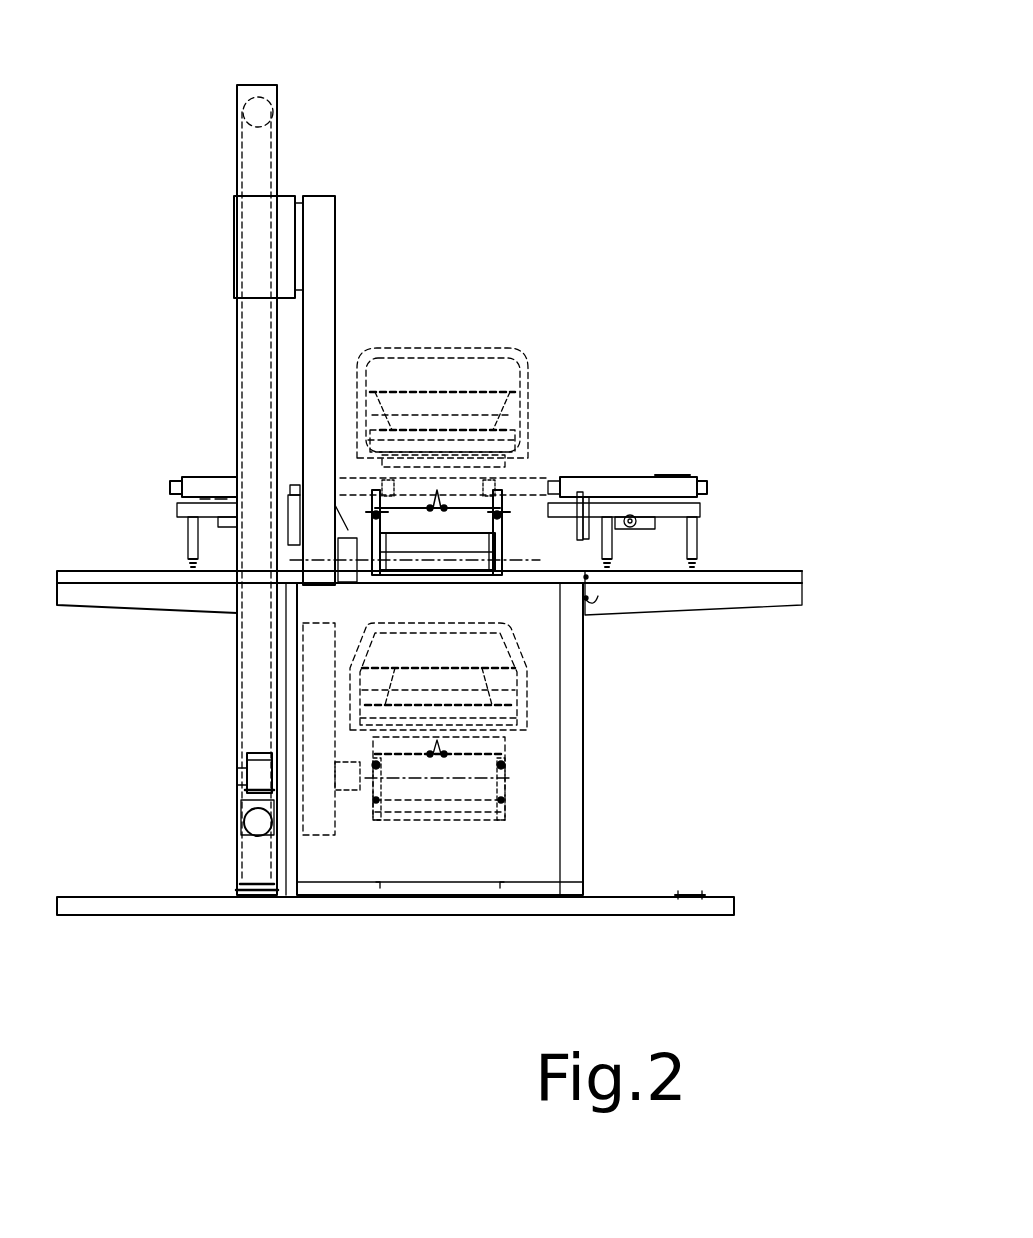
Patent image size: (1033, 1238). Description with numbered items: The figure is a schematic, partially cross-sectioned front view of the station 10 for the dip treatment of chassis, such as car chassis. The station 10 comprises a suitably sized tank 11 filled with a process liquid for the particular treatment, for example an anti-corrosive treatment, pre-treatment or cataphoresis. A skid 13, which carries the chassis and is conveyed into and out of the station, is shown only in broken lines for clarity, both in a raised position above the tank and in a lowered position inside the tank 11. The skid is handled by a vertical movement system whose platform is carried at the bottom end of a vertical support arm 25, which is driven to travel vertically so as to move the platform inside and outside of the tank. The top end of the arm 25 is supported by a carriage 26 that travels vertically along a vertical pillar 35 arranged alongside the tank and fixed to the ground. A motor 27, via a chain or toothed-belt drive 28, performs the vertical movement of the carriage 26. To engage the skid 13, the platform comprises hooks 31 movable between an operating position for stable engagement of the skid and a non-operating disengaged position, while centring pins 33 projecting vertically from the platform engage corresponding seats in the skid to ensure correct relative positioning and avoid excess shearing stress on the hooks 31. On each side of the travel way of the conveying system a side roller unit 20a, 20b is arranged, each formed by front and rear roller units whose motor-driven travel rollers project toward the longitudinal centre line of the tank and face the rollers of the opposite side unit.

The station 10 is at (580, 138).
The tank 11 is at (548, 770).
The skid 13 is at (413, 460).
The side unit 20a is at (180, 462).
The side unit 20b is at (668, 458).
The vertical support arm 25 is at (330, 258).
The carriage 26 is at (232, 233).
The motor 27 is at (243, 793).
The chain or toothed-belt drive 28 is at (237, 350).
The hooks 31 is at (372, 497).
The centring pins 33 is at (437, 500).
The vertical pillar 35 is at (235, 413).